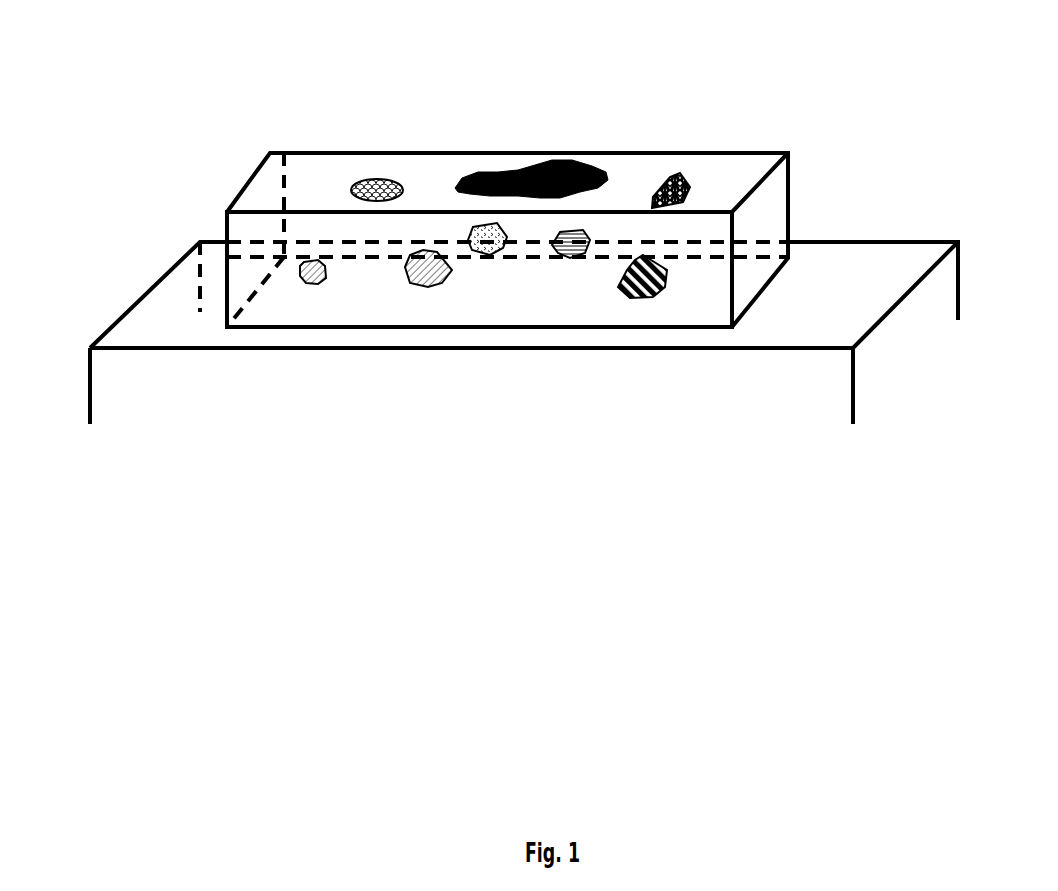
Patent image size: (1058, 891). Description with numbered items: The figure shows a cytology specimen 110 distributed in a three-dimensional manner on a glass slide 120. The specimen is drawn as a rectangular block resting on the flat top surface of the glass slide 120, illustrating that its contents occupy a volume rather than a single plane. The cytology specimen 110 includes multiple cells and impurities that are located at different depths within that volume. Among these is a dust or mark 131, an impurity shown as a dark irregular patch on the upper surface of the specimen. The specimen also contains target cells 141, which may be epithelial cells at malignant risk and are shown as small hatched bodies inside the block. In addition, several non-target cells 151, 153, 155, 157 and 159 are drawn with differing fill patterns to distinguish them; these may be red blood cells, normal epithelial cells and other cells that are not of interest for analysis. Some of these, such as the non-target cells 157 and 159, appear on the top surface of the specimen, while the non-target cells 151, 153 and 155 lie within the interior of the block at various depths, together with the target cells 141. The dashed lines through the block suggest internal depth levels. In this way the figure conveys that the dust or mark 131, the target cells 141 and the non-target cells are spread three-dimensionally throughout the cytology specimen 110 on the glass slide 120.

The cytology specimen 110 is at (328, 181).
The glass slide 120 is at (183, 316).
The dust or mark 131 is at (553, 160).
The target cells 141 is at (405, 282).
The non-target cells 151 is at (488, 256).
The non-target cells 153 is at (572, 258).
The non-target cells 155 is at (637, 297).
The non-target cells 157 is at (380, 178).
The non-target cells 159 is at (693, 173).